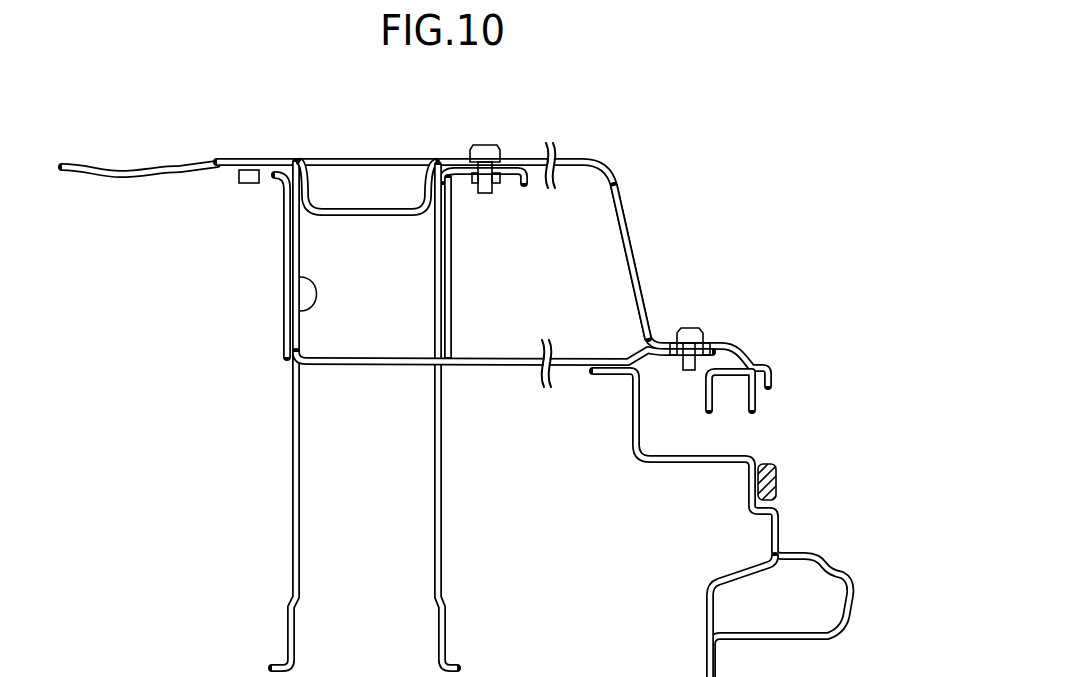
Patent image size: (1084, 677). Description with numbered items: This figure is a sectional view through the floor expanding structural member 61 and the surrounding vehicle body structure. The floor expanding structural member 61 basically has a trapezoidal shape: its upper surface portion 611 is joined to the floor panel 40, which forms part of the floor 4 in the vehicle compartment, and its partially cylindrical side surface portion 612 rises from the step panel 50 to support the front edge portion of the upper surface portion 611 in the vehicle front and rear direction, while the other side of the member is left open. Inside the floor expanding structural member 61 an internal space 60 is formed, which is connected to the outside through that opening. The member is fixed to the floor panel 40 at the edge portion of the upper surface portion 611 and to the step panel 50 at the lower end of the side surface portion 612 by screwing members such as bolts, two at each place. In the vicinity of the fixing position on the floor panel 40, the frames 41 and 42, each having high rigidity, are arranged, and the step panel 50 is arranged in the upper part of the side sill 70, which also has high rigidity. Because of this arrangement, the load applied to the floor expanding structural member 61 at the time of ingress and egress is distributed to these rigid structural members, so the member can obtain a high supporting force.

The floor 4 is at (250, 160).
The floor panel 40 is at (127, 168).
The frame 41 is at (284, 240).
The frame 42 is at (298, 314).
The step panel 50 is at (574, 363).
The internal space 60 is at (540, 279).
The floor expanding structural member 61 is at (620, 160).
The upper surface portion 611 is at (523, 157).
The side surface portion 612 is at (627, 220).
The side sill 70 is at (722, 455).